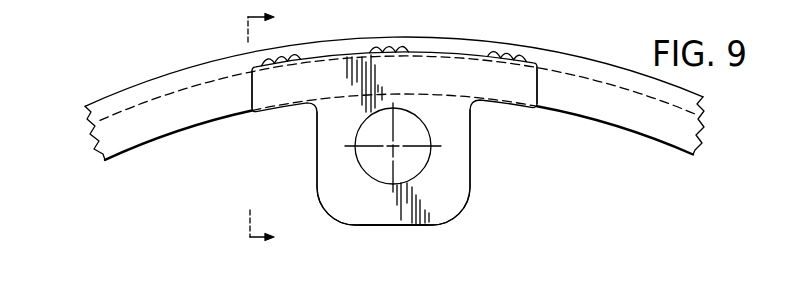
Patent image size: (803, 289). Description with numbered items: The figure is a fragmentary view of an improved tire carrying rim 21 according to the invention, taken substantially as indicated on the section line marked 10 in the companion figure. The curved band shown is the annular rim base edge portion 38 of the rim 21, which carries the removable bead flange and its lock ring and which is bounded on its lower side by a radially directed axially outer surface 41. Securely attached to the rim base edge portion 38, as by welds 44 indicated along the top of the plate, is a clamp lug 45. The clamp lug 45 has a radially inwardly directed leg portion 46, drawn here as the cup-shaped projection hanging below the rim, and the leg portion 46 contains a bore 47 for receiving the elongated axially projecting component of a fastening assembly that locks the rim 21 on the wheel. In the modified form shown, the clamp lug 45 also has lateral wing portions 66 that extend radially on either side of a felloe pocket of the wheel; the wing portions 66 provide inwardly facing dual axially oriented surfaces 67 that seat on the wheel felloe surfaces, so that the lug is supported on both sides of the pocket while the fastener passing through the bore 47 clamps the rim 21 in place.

The tire carrying rim 21 is at (156, 62).
The rim base edge portion 38 is at (578, 72).
The radially directed axially outer surface 41 is at (187, 113).
The welds 44 is at (487, 54).
The clamp lug 45 is at (421, 232).
The radially inwardly directed leg portion 46 is at (458, 188).
The bore 47 is at (423, 168).
The lateral wing portions 66 is at (256, 88).
The inwardly facing dual axially oriented surfaces 67 is at (280, 110).
The section line 10- 10 is at (277, 130).